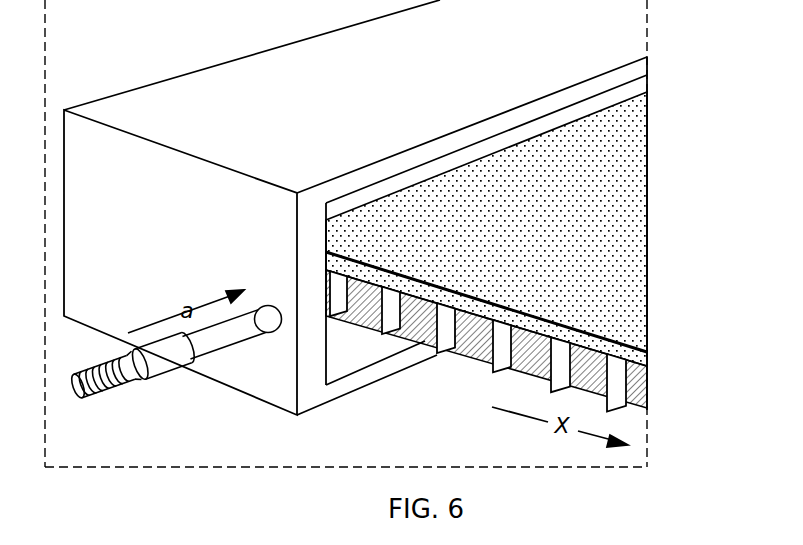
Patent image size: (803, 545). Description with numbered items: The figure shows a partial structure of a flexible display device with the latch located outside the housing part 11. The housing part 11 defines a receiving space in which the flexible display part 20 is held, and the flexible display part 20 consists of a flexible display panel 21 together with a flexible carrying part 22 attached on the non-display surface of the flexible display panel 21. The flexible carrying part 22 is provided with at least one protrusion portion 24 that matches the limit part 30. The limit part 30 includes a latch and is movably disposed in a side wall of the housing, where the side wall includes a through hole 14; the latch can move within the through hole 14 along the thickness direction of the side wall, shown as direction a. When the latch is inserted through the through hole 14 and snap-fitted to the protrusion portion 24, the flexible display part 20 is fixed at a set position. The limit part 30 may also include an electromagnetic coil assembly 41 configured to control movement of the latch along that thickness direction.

The housing part 11 is at (137, 302).
The through hole 14 is at (273, 333).
The flexible display part 20 is at (547, 272).
The flexible display panel 21 is at (618, 330).
The flexible carrying part 22 is at (521, 361).
The protrusion portion 24 is at (497, 374).
The limit part 30 is at (169, 380).
The electromagnetic coil assembly 41 is at (104, 376).